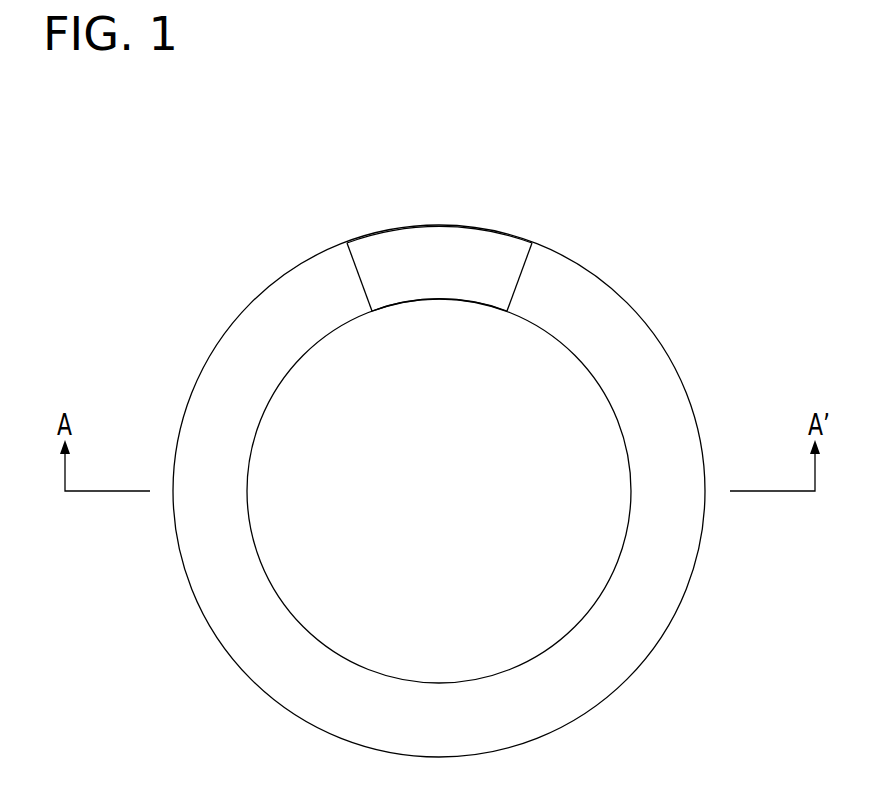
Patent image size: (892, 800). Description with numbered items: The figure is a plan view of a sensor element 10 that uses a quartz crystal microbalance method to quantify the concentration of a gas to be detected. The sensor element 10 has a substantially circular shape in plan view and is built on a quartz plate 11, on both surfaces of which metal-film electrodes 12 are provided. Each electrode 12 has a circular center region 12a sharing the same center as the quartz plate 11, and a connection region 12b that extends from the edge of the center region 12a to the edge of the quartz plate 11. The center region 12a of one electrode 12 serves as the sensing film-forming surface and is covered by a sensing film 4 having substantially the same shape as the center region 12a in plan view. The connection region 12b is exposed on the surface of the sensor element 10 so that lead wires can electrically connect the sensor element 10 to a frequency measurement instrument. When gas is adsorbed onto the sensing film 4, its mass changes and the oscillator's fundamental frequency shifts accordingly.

The sensor element 10 is at (445, 430).
The quartz plate 11 is at (630, 632).
The electrode 12 is at (439, 259).
The center region 12a is at (410, 415).
The connection region 12b is at (453, 267).
The sensing film 4 is at (380, 528).